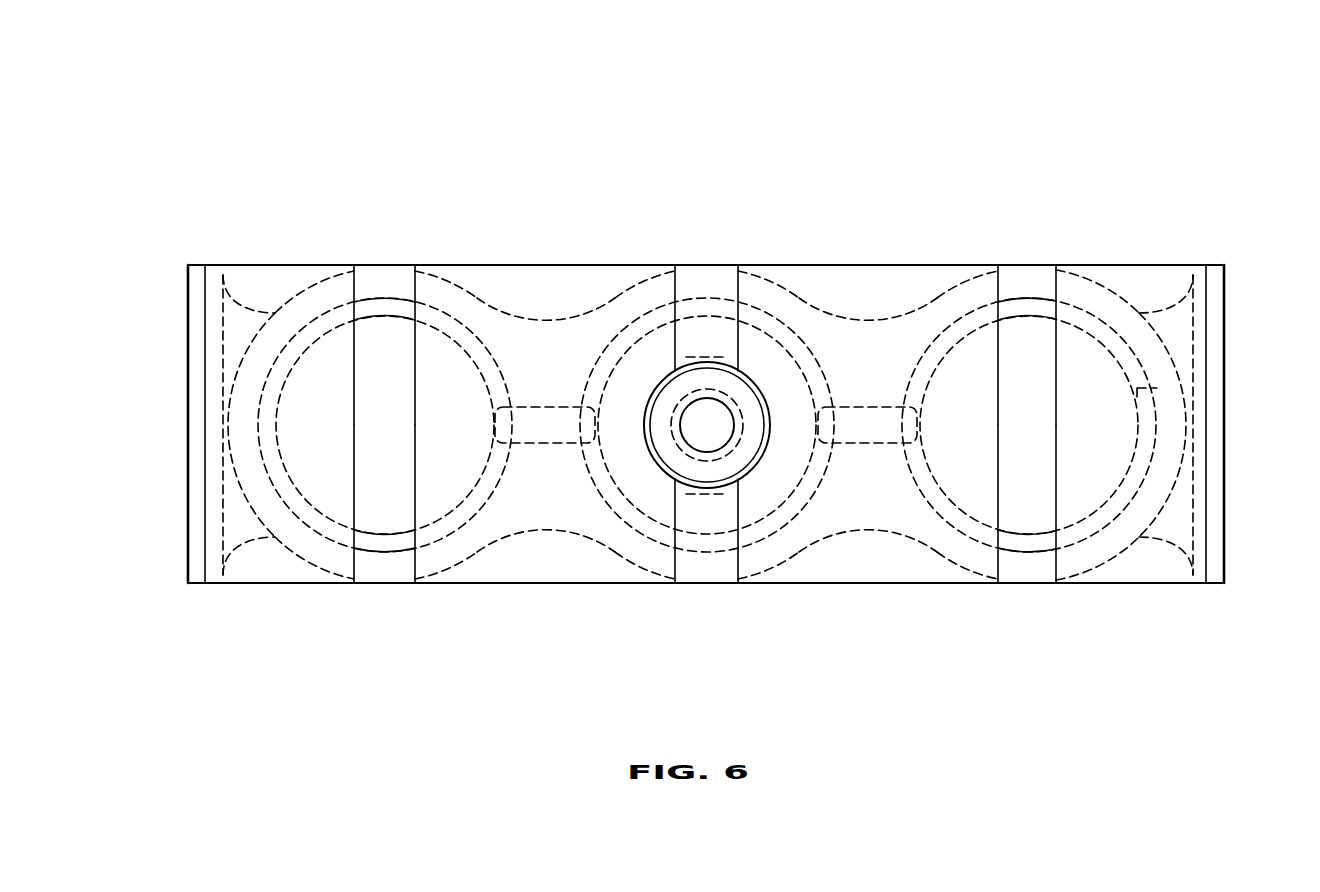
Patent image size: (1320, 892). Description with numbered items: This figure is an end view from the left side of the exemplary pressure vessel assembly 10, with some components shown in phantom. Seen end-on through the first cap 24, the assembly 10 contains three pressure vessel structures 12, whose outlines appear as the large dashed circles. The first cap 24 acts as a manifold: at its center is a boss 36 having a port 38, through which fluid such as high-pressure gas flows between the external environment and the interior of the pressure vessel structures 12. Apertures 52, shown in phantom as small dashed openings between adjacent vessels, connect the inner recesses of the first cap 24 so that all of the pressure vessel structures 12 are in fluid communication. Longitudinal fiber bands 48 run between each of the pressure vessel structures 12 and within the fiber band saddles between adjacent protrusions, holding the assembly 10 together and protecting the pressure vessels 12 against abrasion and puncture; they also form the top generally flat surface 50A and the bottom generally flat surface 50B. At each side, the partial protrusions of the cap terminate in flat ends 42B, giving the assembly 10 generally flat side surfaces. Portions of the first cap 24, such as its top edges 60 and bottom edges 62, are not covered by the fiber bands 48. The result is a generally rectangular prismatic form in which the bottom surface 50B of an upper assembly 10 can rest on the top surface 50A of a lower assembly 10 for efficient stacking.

The assembly 10 is at (201, 172).
The pressure vessel structure 12 is at (509, 405).
The first cap 24 is at (547, 510).
The boss 36 is at (705, 372).
The port 38 is at (706, 440).
The flat end 42B is at (188, 422).
The longitudinal fiber band 48 is at (268, 282).
The top generally flat surface 50A is at (486, 256).
The bottom generally flat surface 50B is at (436, 602).
The aperture 52 is at (545, 424).
The top edge 60 is at (201, 264).
The bottom edge 62 is at (190, 585).